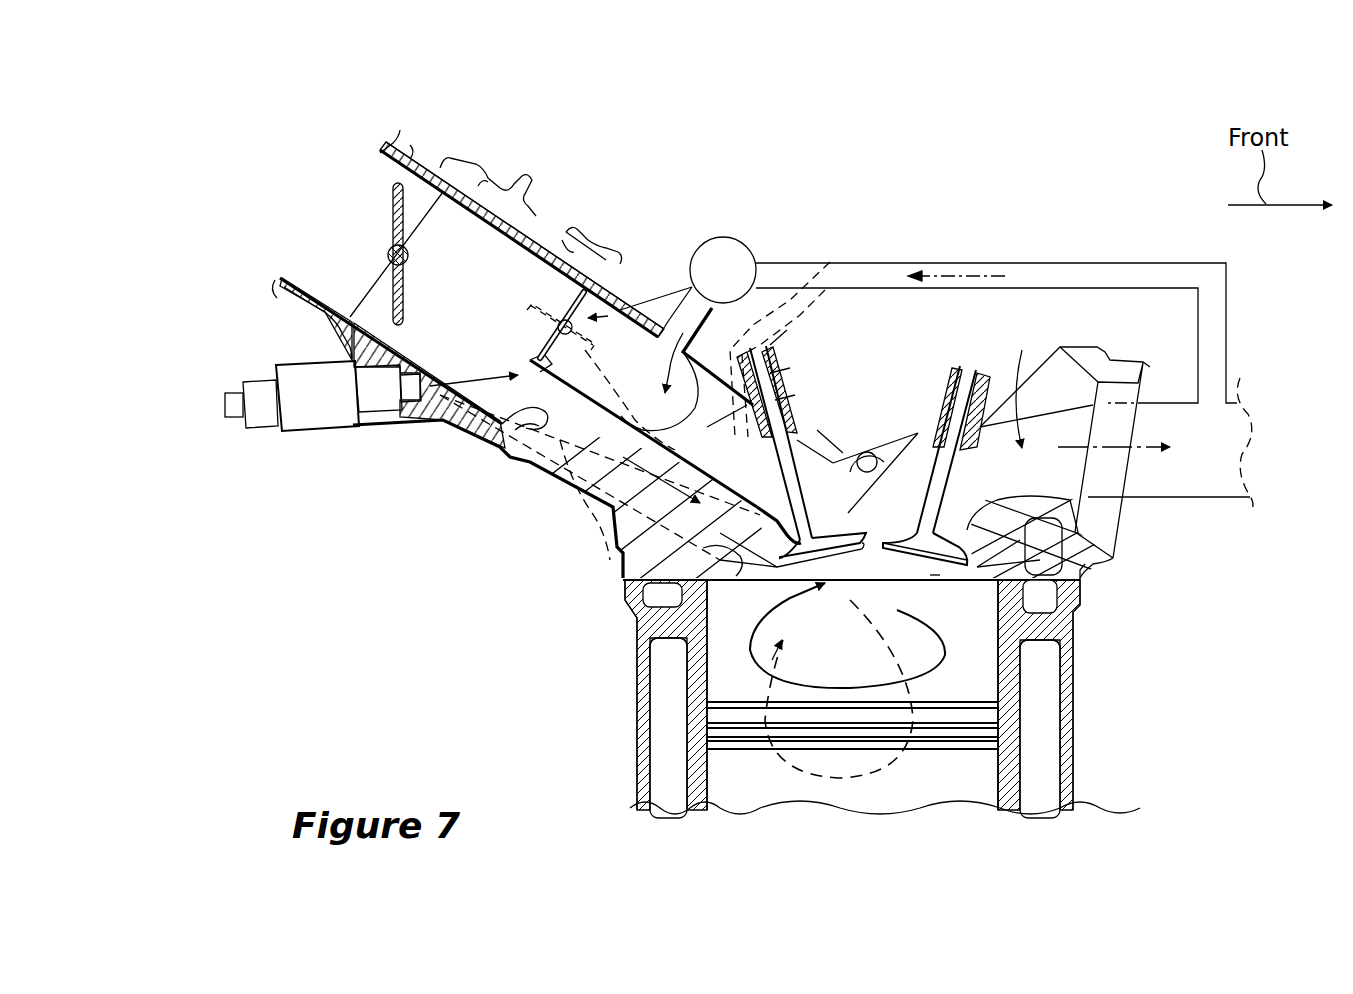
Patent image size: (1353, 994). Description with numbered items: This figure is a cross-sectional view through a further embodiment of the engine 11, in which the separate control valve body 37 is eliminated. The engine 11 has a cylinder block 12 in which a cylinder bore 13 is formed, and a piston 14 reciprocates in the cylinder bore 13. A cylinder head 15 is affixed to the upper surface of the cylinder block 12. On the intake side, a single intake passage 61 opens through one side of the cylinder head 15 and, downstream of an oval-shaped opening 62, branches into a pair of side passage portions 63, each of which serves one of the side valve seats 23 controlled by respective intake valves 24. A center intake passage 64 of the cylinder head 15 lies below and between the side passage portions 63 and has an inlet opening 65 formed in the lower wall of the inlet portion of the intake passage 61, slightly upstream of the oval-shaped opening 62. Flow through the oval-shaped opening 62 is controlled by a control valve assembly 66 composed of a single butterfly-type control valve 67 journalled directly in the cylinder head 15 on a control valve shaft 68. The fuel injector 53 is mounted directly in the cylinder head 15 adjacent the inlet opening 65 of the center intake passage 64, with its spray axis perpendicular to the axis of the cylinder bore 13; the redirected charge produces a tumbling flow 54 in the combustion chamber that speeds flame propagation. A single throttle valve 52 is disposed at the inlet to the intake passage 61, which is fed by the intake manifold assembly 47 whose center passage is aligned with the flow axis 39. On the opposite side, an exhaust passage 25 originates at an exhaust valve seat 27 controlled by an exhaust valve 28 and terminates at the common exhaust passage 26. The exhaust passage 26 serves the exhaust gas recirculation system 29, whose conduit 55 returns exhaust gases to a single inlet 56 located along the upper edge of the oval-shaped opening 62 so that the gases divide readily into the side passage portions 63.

The engine 11 is at (272, 612).
The cylinder block 12 is at (1162, 678).
The cylinder bore 13 is at (1002, 790).
The piston 14 is at (927, 790).
The cylinder head 15 is at (1102, 557).
The valve seat 23 is at (846, 450).
The intake valve 24 is at (748, 360).
The exhaust passage 25 is at (1025, 517).
The common exhaust passage 26 is at (1250, 383).
The exhaust valve seat 27 is at (1027, 538).
The exhaust valve 28 is at (939, 575).
The exhaust gas recirculation system 29 is at (1017, 258).
The control valve body 37 is at (526, 450).
The flow axis 39 is at (367, 232).
The intake manifold assembly 47 is at (423, 152).
The throttle valve 52 is at (395, 228).
The fuel injector 53 is at (312, 430).
The tumbling flow 54 is at (748, 652).
The conduit 55 is at (725, 248).
The inlet 56 is at (660, 346).
The single intake passage 61 is at (488, 195).
The oval-shaped opening 62 is at (579, 415).
The side passage portion 63 is at (760, 413).
The center intake passage 64 is at (625, 490).
The inlet opening 65 is at (520, 369).
The control valve assembly 66 is at (646, 296).
The control valve 67 is at (538, 302).
The control valve shaft 68 is at (570, 252).